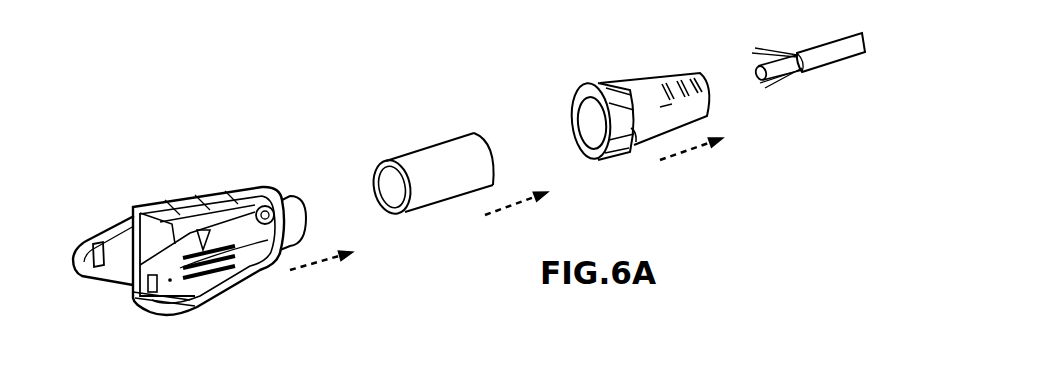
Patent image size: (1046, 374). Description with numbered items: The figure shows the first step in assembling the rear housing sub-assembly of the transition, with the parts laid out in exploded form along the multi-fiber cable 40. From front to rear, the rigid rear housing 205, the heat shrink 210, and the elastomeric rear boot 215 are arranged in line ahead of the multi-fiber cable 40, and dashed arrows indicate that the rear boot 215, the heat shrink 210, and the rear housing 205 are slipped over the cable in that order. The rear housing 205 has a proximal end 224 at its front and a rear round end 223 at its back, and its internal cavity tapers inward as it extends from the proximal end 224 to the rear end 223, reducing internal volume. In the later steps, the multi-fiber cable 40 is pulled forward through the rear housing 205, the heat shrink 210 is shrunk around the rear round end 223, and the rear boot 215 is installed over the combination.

The rear housing 205 is at (180, 175).
The rear round end 223 is at (286, 167).
The proximal end 224 is at (110, 306).
The heat shrink 210 is at (434, 216).
The rear boot 215 is at (587, 69).
The multi-fiber cable 40 is at (816, 80).